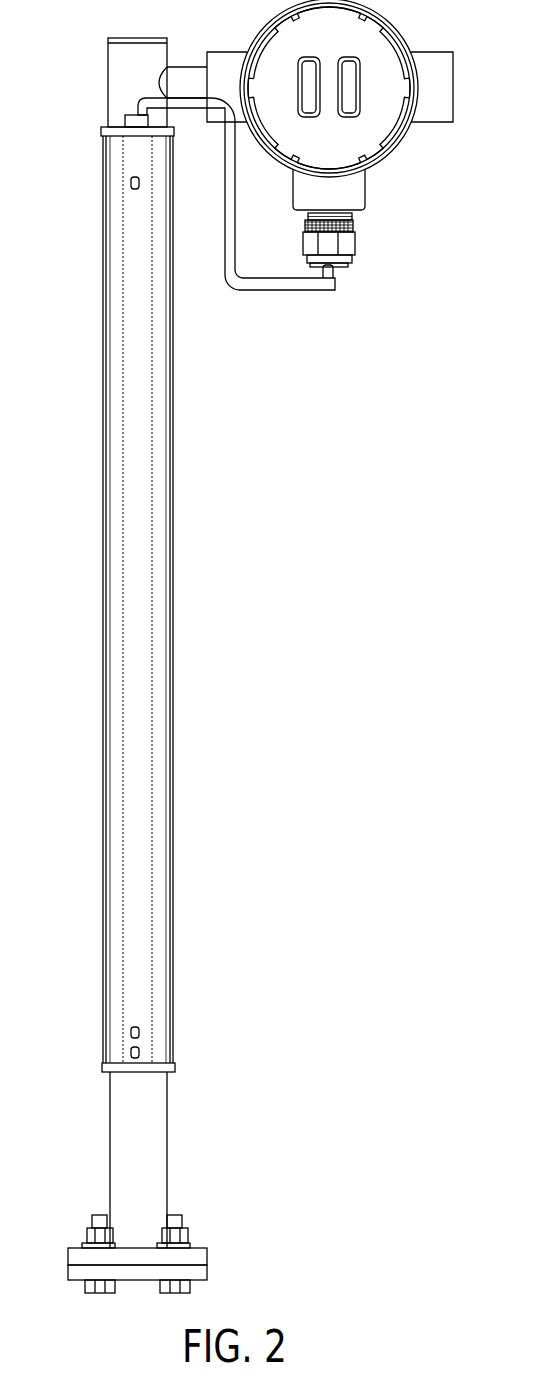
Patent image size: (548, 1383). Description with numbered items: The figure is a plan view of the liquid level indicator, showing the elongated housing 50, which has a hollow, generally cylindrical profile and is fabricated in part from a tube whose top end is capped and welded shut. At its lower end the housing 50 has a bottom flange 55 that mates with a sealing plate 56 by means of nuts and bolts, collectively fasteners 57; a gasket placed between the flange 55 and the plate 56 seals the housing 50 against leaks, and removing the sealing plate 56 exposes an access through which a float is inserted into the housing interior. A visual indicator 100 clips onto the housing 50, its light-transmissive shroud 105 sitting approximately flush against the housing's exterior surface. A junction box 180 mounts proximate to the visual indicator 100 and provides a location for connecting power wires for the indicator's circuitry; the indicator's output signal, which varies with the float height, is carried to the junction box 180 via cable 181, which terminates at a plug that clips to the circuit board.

The elongated housing 50 is at (108, 74).
The visual indicator 100 is at (105, 203).
The shroud 105 is at (173, 1050).
The junction box 180 is at (373, 43).
The cable 181 is at (263, 292).
The fasteners 57 is at (190, 1235).
The bottom flange 55 is at (200, 1255).
The sealing plate 56 is at (200, 1272).